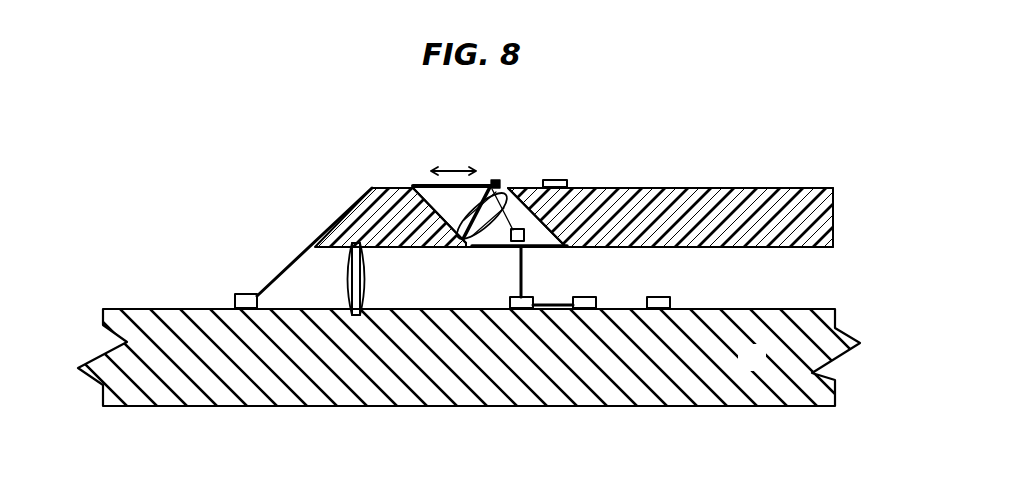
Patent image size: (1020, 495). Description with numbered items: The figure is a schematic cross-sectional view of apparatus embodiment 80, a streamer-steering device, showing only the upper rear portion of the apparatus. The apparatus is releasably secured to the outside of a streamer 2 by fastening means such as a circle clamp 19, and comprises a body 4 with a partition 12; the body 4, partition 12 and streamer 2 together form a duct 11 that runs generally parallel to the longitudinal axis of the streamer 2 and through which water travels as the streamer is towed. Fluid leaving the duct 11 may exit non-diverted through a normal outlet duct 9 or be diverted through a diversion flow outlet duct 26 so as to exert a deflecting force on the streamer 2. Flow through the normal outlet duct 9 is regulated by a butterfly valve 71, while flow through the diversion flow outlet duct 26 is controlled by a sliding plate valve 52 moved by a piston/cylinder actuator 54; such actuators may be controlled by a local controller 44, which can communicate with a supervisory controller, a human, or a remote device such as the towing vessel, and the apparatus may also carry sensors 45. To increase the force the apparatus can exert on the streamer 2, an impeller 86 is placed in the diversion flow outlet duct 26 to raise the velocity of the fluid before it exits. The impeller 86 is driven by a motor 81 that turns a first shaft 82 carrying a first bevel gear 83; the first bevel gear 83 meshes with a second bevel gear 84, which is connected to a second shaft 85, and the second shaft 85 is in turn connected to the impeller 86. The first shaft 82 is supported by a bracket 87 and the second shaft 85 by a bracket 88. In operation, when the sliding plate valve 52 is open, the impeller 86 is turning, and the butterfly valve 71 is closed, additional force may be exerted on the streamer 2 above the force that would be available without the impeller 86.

The streamer 2 is at (761, 368).
The body 4 is at (788, 186).
The normal outlet duct 9 is at (380, 256).
The duct 11 is at (733, 265).
The partition 12 is at (290, 262).
The circle clamp 19 is at (243, 293).
The diversion flow outlet duct 26 is at (590, 187).
The local controller 44 is at (587, 306).
The sensors 45 is at (659, 306).
The sliding plate valve 52 is at (420, 186).
The piston/cylinder actuator 54 is at (553, 181).
The butterfly valve 71 is at (343, 270).
The apparatus embodiment 80 is at (678, 141).
The motor 81 is at (520, 306).
The first shaft 82 is at (517, 283).
The first bevel gear 83 is at (545, 250).
The second bevel gear 84 is at (503, 250).
The second shaft 85 is at (460, 243).
The impeller 86 is at (492, 187).
The bracket 87 is at (560, 249).
The bracket 88 is at (505, 192).